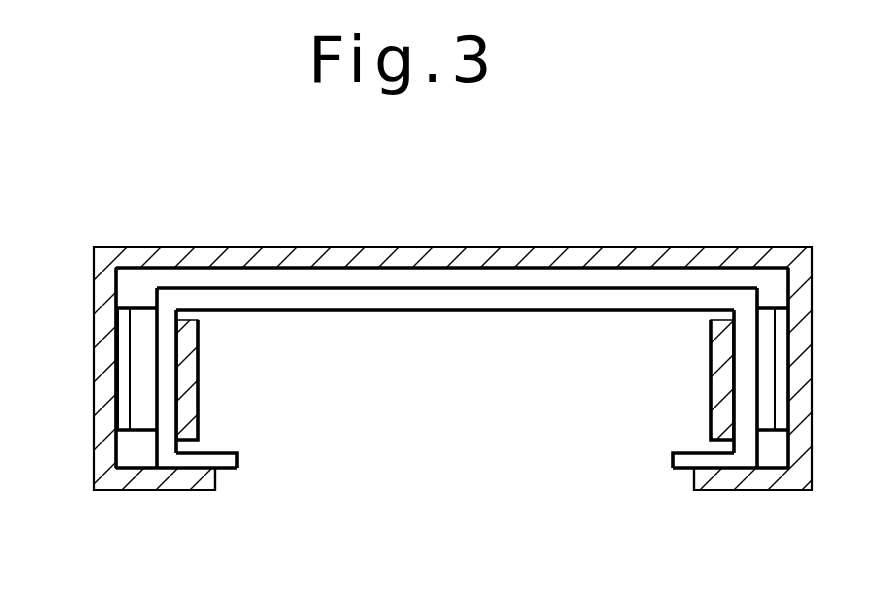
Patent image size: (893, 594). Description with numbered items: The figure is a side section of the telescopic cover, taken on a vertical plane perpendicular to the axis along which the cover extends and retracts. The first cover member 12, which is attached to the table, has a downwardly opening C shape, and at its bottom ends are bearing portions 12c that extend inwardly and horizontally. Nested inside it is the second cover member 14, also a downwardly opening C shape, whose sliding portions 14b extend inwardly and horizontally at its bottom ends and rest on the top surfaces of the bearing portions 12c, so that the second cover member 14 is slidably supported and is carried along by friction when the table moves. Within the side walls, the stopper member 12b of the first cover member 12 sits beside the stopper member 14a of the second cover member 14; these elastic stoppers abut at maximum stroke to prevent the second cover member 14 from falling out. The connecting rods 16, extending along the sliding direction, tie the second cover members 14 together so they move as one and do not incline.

The first cover member 12 is at (450, 247).
The stopper member 12b is at (125, 354).
The bearing portion 12c is at (167, 492).
The second cover member 14 is at (450, 312).
The stopper member 14a is at (143, 328).
The sliding portion 14b is at (225, 452).
The connecting rod 16 is at (199, 371).